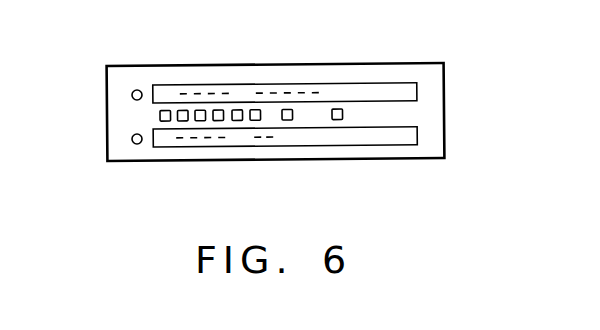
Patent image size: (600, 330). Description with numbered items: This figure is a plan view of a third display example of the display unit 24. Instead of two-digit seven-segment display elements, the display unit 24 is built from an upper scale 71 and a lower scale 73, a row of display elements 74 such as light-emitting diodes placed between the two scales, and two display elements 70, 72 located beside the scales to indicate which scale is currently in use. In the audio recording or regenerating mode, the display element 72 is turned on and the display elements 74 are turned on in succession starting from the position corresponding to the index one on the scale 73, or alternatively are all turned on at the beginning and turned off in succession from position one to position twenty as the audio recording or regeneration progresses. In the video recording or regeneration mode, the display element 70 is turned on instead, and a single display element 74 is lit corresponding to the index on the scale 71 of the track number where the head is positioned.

The display unit 24 is at (445, 72).
The display element 70 is at (137, 90).
The scale 71 is at (221, 84).
The display element 72 is at (137, 144).
The scale 73 is at (222, 148).
The display elements 74 is at (160, 113).